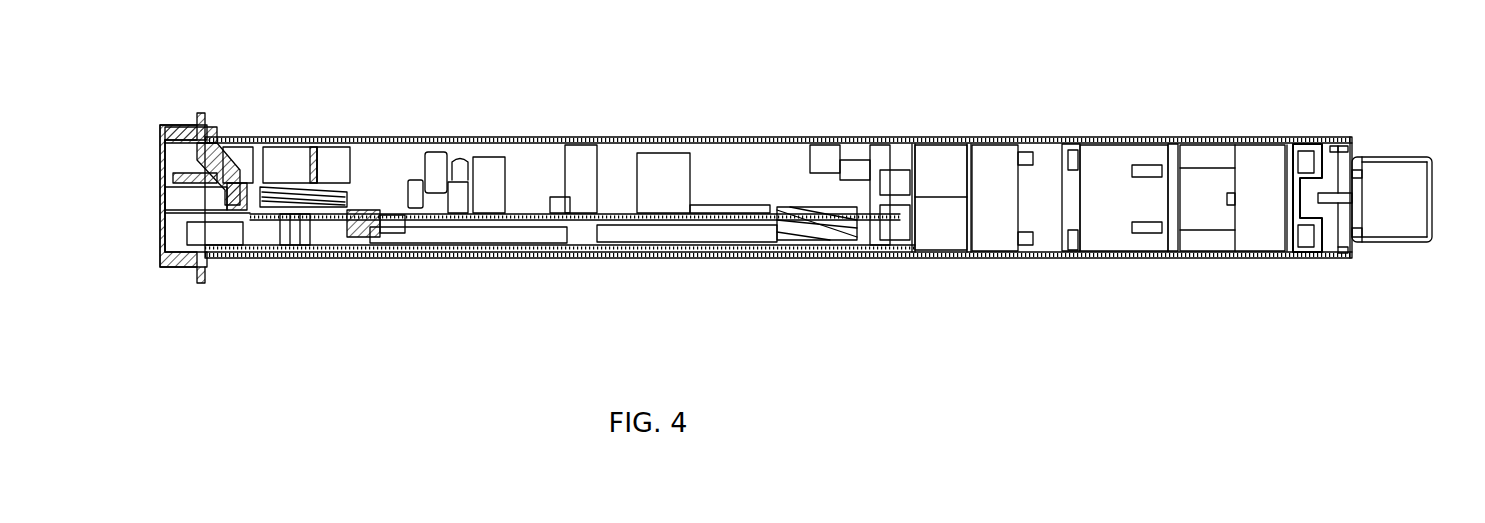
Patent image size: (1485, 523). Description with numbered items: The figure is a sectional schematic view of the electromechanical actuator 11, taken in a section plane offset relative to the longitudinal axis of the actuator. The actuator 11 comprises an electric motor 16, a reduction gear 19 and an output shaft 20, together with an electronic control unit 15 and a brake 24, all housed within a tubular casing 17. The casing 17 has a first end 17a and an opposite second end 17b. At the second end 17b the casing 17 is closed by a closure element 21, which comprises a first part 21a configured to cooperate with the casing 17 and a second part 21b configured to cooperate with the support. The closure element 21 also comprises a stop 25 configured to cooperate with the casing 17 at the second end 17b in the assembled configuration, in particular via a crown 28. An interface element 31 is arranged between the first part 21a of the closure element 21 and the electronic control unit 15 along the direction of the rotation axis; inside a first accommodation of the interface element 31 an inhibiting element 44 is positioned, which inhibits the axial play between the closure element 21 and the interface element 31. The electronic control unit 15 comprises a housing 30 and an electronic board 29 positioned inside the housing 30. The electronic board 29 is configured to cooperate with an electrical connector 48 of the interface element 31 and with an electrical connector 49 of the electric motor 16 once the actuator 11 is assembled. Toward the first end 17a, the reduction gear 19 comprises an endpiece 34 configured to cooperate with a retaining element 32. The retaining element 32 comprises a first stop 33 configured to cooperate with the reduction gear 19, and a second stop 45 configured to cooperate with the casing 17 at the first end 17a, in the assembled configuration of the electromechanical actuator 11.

The electromechanical actuator 11 is at (186, 98).
The electronic control unit 15 is at (520, 218).
The electric motor 16 is at (990, 242).
The casing 17 is at (965, 142).
The first end 17a is at (1348, 140).
The second end 17b is at (240, 145).
The reduction gear 19 is at (1248, 247).
The output shaft 20 is at (1395, 216).
The closure element 21 is at (170, 268).
The first part 21a is at (243, 145).
The second part 21b is at (163, 137).
The brake 24 is at (1107, 163).
The stop 25 is at (204, 274).
The crown 28 is at (292, 136).
The electronic board 29 is at (427, 216).
The housing 30 is at (515, 143).
The interface element 31 is at (298, 200).
The retaining element 32 is at (1327, 247).
The first stop 33 is at (1293, 197).
The endpiece 34 is at (1287, 147).
The inhibiting element 44 is at (248, 202).
The second stop 45 is at (1354, 139).
The electrical connector 48 is at (357, 228).
The electrical connector 49 is at (817, 242).